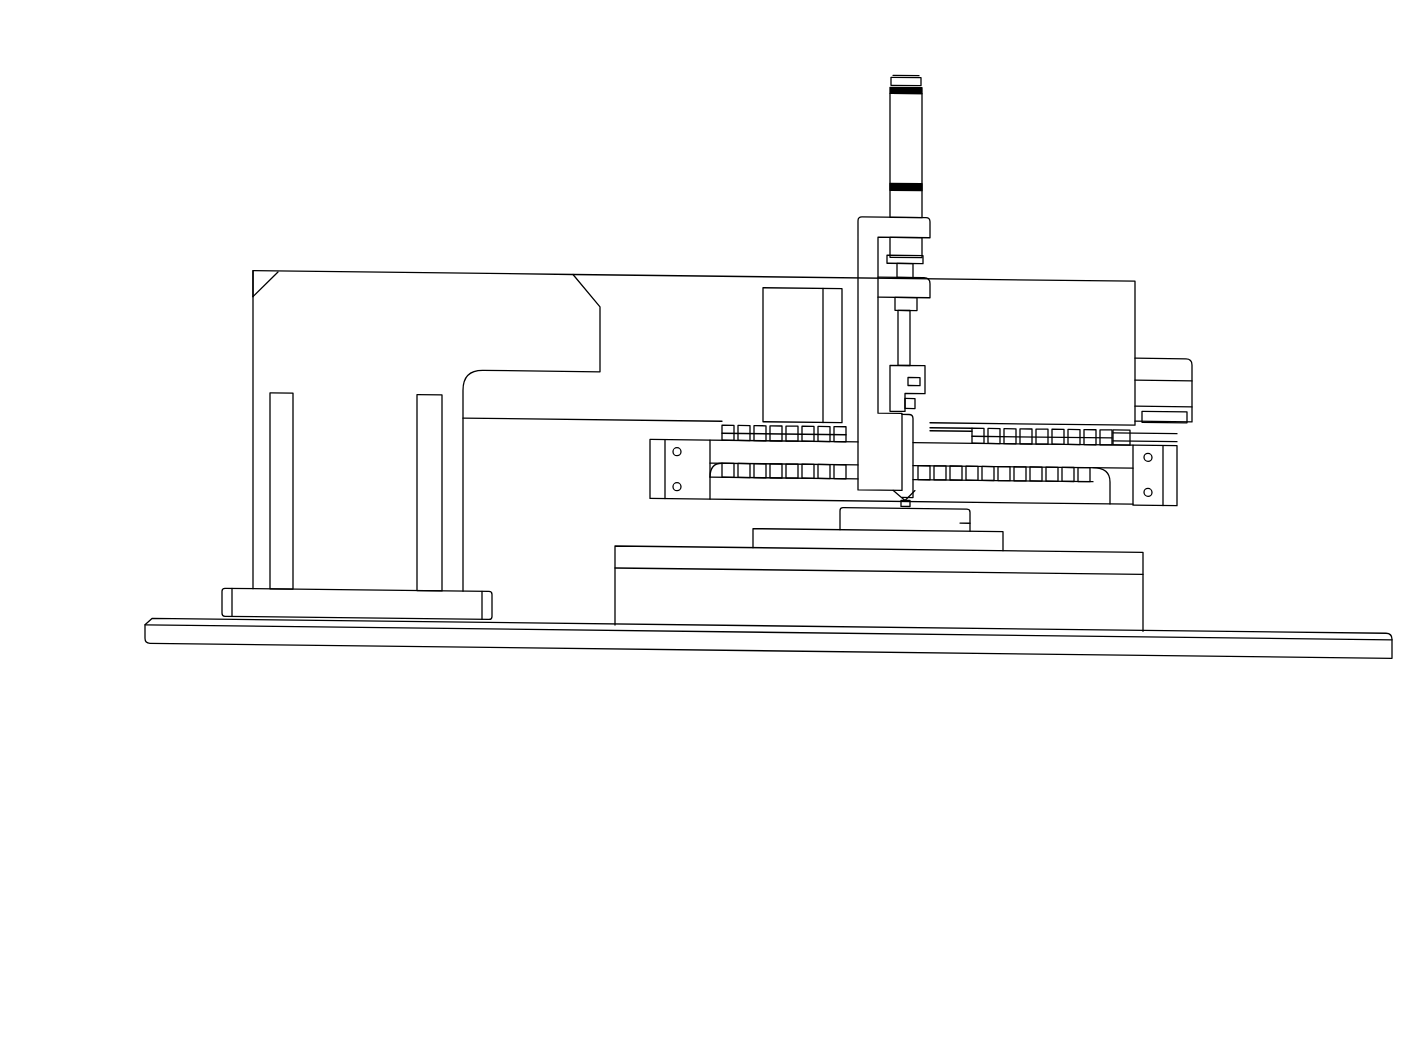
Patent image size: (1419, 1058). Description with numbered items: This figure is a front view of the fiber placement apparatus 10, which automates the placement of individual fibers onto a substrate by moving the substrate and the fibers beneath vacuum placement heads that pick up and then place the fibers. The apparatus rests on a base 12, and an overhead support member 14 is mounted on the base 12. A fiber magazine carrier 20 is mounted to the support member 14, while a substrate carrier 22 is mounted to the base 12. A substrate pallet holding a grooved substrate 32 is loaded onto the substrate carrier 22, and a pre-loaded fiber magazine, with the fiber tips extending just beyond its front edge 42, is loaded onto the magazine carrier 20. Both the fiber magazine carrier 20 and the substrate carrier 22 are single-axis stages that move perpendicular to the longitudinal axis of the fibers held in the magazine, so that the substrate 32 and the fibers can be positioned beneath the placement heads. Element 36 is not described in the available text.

The fiber placement apparatus 10 is at (768, 460).
The base 12 is at (1253, 643).
The overhead support member 14 is at (395, 297).
The fiber magazine carrier 20 is at (1192, 386).
The substrate carrier 22 is at (1143, 597).
The grooved substrate 32 is at (902, 504).
The workpiece 36 is at (962, 520).
The front edge 42 is at (1090, 485).